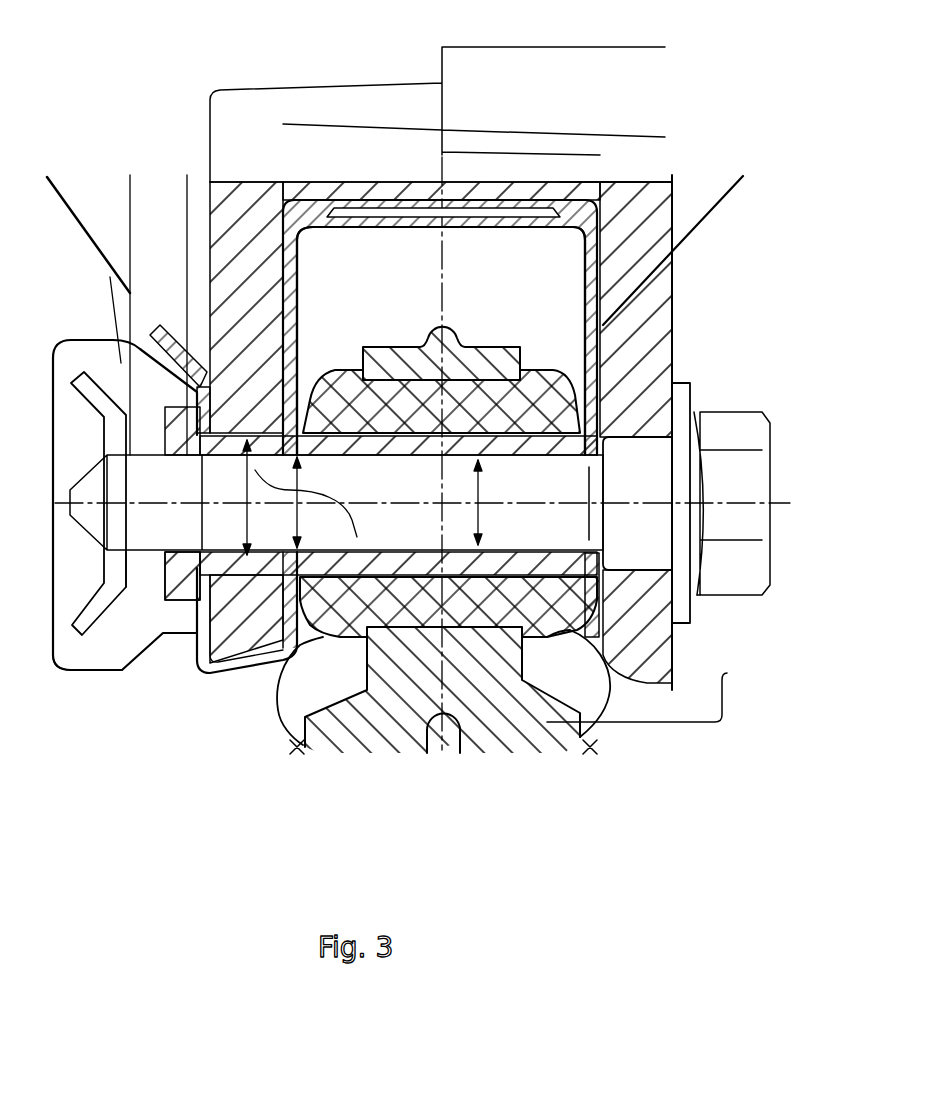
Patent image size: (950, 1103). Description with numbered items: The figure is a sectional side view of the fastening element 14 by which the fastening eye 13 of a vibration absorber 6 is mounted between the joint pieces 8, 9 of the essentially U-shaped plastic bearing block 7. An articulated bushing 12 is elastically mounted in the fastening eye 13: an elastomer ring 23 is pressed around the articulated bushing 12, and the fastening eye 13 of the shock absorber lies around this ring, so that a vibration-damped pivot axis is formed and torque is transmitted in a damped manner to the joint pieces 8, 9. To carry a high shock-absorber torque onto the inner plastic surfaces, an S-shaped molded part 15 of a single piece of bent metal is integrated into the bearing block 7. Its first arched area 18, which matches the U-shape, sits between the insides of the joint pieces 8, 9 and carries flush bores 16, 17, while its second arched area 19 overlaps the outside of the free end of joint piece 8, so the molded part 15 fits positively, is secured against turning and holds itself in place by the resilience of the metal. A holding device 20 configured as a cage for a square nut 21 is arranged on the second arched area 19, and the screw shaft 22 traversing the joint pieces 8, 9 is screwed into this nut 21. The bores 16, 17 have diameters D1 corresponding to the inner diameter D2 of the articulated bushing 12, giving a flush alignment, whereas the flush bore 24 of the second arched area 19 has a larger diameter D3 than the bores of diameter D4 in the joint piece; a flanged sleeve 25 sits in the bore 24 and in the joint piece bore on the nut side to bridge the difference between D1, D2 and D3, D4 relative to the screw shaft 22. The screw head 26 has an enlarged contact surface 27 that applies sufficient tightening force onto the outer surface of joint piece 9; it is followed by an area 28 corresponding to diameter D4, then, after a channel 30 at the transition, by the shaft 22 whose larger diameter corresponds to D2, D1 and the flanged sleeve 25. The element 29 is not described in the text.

The vibration absorber 6 is at (727, 673).
The bearing block 7 is at (442, 47).
The joint piece 8 is at (237, 90).
The joint piece 9 is at (640, 223).
The articulated bushing 12 is at (660, 372).
The fastening eye 13 is at (560, 182).
The fastening element 14 is at (792, 475).
The S-shaped molded part 15 is at (477, 367).
The flush bore 16 is at (290, 625).
The flush bore 17 is at (700, 588).
The first arched area 18 is at (442, 103).
The second arched area 19 is at (228, 660).
The holding device 20 is at (105, 330).
The nut 21 is at (167, 590).
The screw shaft 22 is at (370, 480).
The elastomer ring 23 is at (610, 292).
The flush bore 24 is at (168, 603).
The flanged sleeve 25 is at (233, 395).
The screw head 26 is at (740, 517).
The enlarged contact surface 27 is at (680, 383).
The area 28 is at (647, 522).
The bracket leg 29 is at (67, 668).
The channel 30 is at (680, 437).
The diameter D1 is at (356, 480).
The inner diameter D2 is at (478, 548).
The diameter D3 is at (123, 560).
The diameter D4 is at (246, 560).